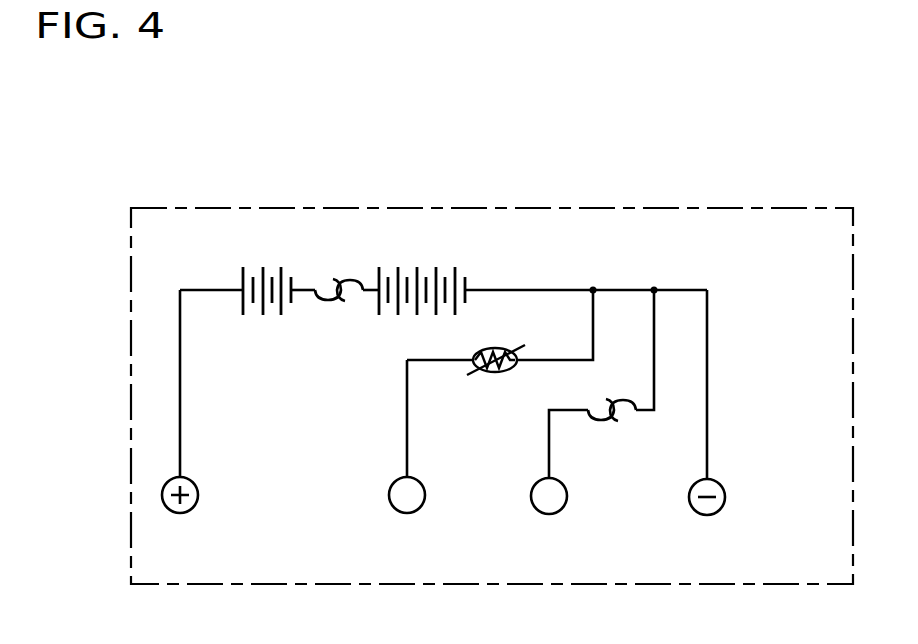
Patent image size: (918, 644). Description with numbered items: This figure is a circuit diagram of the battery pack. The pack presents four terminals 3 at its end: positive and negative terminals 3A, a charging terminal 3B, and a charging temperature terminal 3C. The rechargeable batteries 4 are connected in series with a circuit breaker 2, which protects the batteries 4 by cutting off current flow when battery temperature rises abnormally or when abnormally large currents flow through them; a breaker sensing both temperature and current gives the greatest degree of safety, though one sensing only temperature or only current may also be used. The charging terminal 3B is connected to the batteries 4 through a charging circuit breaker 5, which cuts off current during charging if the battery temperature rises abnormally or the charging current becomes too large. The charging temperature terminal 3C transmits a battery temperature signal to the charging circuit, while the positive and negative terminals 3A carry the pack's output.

The circuit breaker 2 is at (338, 269).
The terminals 3 is at (760, 470).
The positive and negative terminals 3A is at (190, 510).
The charging terminal 3B is at (538, 512).
The charging temperature terminal 3C is at (395, 511).
The batteries 4 is at (262, 249).
The charging circuit breaker 5 is at (612, 428).